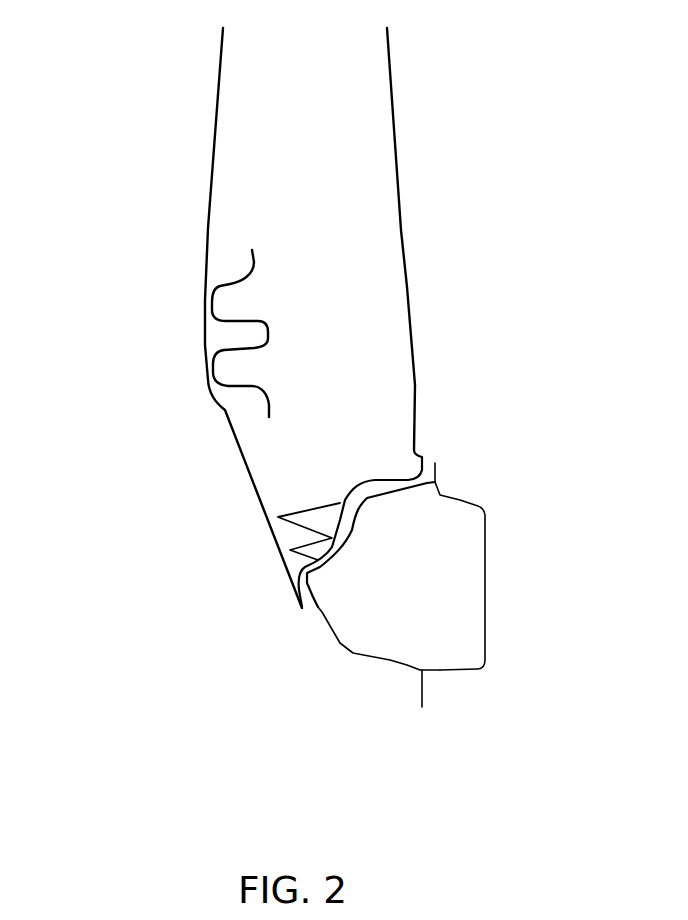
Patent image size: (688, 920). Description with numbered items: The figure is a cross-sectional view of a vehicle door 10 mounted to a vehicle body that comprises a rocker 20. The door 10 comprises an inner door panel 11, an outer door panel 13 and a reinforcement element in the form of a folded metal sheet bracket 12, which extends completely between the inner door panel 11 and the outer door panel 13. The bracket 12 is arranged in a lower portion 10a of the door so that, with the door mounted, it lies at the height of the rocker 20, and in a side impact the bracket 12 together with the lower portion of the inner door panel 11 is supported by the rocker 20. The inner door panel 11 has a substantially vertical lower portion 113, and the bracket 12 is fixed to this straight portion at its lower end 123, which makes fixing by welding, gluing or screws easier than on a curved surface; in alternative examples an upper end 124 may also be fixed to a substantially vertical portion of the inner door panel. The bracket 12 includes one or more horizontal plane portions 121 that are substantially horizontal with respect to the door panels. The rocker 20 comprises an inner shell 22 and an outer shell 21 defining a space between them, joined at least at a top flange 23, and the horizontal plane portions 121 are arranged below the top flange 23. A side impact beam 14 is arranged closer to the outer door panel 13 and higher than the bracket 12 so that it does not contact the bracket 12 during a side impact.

The vehicle door 10 is at (167, 103).
The lower portion of the door 10a is at (238, 602).
The inner door panel 11 is at (407, 287).
The outer door panel 13 is at (207, 225).
The side impact beam 14 is at (217, 345).
The folded metal sheet bracket 12 is at (288, 537).
The horizontal plane portions 121 is at (312, 502).
The lower end of the bracket 123 is at (298, 569).
The upper end of the bracket 124 is at (413, 435).
The substantially vertical lower portion 113 is at (312, 590).
The rocker 20 is at (440, 630).
The outer rocker shell 21 is at (352, 653).
The inner rocker shell 22 is at (485, 647).
The top flange 23 is at (435, 468).